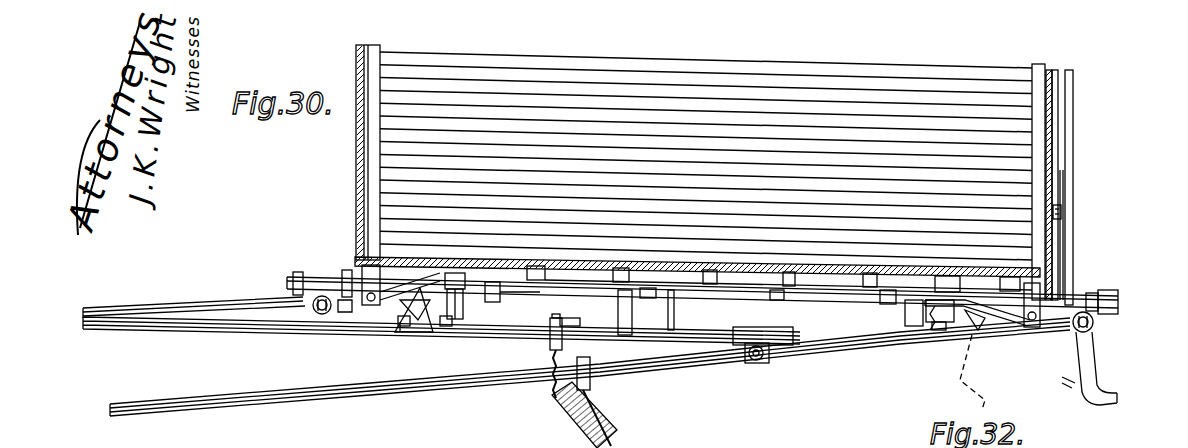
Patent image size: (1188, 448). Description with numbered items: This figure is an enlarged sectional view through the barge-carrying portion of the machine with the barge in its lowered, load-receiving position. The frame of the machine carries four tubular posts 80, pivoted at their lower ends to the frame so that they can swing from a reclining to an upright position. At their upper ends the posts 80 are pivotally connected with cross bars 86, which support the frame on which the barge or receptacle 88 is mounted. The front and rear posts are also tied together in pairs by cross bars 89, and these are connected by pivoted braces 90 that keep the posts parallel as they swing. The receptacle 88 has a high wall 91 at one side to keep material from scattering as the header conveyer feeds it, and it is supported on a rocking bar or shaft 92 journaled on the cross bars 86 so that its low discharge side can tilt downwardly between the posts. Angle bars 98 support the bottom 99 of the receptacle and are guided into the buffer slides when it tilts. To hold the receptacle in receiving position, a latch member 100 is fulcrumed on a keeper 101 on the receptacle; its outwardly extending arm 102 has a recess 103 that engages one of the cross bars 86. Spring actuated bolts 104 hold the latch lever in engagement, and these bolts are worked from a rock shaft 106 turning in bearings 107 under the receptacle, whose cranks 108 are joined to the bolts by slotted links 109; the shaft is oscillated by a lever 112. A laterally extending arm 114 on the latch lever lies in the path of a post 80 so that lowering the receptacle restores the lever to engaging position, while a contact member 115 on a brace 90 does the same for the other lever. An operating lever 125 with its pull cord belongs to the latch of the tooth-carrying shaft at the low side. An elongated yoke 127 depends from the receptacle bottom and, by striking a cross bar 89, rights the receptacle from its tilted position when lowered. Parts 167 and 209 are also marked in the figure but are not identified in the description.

The posts 80 is at (262, 304).
The cross bars 86 is at (321, 316).
The barge or receptacle 88 is at (1000, 205).
The cross bars 89 is at (757, 362).
The braces 90 is at (550, 322).
The high wall 91 is at (378, 45).
The rocking bar or shaft 92 is at (565, 286).
The angle bars 98 is at (355, 266).
The bottom 99 is at (826, 278).
The latch member 100 is at (408, 305).
The keeper 101 is at (372, 305).
The outwardly extending arm 102 is at (348, 312).
The recess 103 is at (352, 282).
The spring actuated bolts 104 is at (497, 290).
The rock shaft 106 is at (667, 292).
The bearings 107 is at (360, 256).
The cranks 108 is at (552, 350).
The links 109 is at (520, 330).
The lever 112 is at (1068, 200).
The laterally extending arm 114 is at (918, 332).
The contact member 115 is at (430, 292).
The operating lever 125 is at (1062, 216).
The elongated yoke 127 is at (682, 345).
The belt 167 is at (600, 412).
The lever 209 is at (1097, 360).